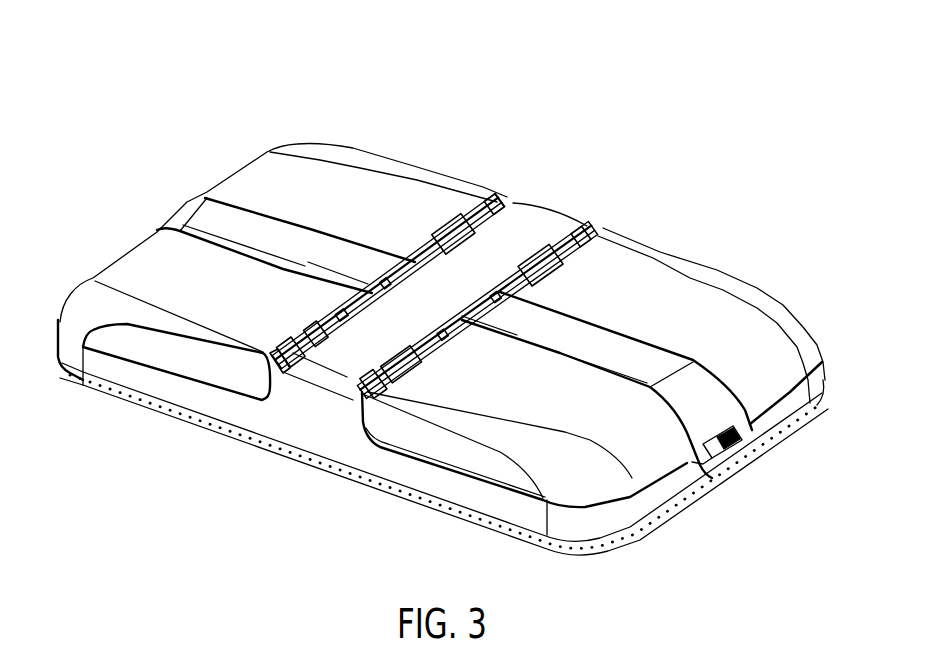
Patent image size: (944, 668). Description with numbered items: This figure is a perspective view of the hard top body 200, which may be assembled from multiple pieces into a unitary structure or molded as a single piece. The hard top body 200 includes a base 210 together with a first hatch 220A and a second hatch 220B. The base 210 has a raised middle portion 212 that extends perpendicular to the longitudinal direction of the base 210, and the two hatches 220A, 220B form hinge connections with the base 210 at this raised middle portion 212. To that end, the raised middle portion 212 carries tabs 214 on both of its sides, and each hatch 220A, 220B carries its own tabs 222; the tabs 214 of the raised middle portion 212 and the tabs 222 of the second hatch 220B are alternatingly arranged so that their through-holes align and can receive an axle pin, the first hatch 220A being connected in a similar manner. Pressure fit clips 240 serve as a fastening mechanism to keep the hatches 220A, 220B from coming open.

The hard top body 200 is at (106, 70).
The base 210 is at (600, 530).
The raised middle portion 212 is at (533, 218).
The tab 214 is at (547, 247).
The first hatch 220A is at (93, 293).
The second hatch 220B is at (651, 275).
The tab 222 is at (300, 350).
The pressure fit clip 240 is at (730, 452).